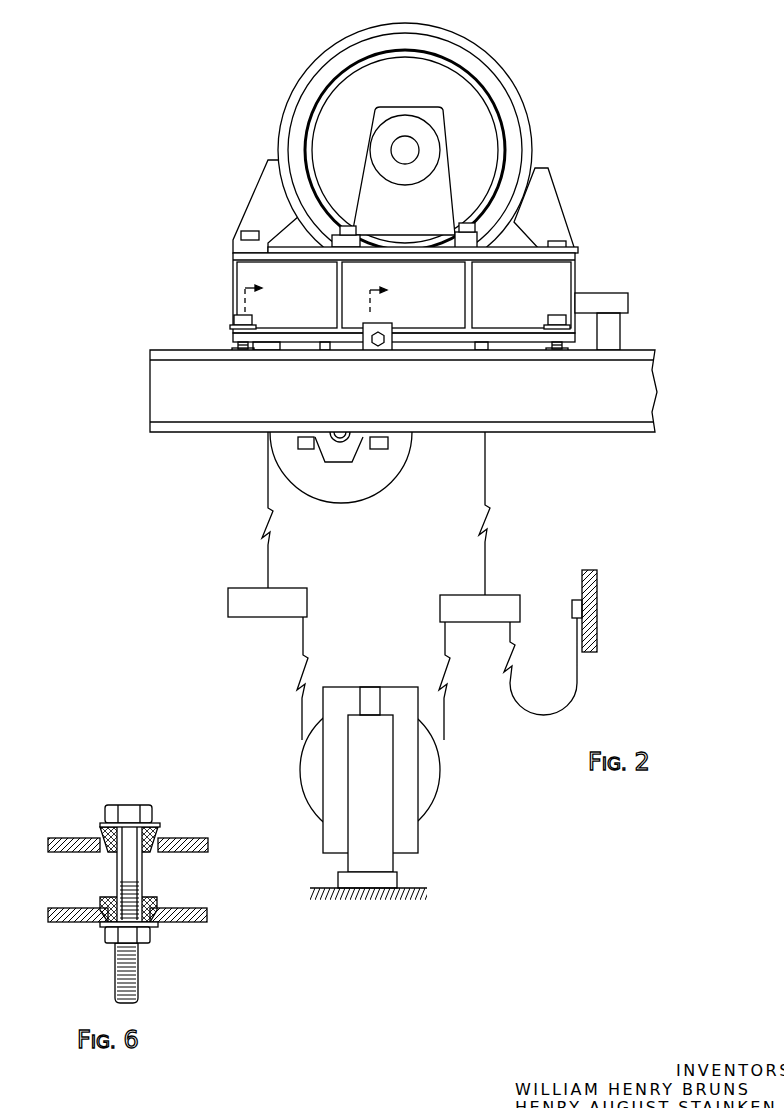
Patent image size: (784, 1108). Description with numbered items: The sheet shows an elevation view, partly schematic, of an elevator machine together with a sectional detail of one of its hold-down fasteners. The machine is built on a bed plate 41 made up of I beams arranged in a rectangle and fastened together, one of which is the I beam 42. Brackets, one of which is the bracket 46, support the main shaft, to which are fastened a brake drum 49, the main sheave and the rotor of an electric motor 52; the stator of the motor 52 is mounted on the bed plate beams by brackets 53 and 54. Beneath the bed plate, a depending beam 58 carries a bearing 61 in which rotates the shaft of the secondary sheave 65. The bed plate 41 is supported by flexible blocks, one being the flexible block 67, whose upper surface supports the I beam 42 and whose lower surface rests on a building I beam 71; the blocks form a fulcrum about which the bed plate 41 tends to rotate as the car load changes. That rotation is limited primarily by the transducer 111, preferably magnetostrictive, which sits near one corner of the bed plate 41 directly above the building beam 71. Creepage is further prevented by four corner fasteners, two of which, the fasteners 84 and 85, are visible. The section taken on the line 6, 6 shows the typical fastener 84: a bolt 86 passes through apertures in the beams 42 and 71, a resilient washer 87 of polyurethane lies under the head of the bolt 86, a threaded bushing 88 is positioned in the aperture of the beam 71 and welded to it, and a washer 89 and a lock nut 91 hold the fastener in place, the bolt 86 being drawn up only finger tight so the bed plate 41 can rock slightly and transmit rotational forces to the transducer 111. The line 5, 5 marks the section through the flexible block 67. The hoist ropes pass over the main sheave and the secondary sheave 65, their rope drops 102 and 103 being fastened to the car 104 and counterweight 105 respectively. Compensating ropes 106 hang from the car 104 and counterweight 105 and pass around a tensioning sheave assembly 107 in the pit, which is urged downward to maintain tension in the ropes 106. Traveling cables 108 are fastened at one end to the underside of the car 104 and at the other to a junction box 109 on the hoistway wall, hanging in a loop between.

In FIG. 2, the bed plate 41 is at (440, 294).
In FIG. 2, the I beam 42 is at (233, 272).
In FIG. 6, the I beam 42 is at (195, 840).
In FIG. 2, the bracket 46 is at (449, 188).
In FIG. 2, the brake drum 49 is at (346, 72).
In FIG. 2, the electric motor 52 is at (473, 37).
In FIG. 2, the bracket 53 is at (558, 188).
In FIG. 2, the bracket 54 is at (258, 178).
In FIG. 2, the depending beam 58 is at (423, 337).
In FIG. 2, the bearing 61 is at (344, 455).
In FIG. 2, the secondary sheave 65 is at (402, 479).
In FIG. 2, the flexible block 67 is at (391, 325).
In FIG. 2, the I beam 71 is at (150, 400).
In FIG. 6, the I beam 71 is at (196, 921).
In FIG. 2, the fastener 84 is at (236, 340).
In FIG. 6, the fastener 84 is at (77, 913).
In FIG. 2, the fastener 85 is at (563, 322).
In FIG. 6, the bolt 86 is at (143, 860).
In FIG. 6, the resilient washer 87 is at (160, 826).
In FIG. 6, the threaded bushing 88 is at (160, 905).
In FIG. 6, the washer 89 is at (160, 926).
In FIG. 6, the lock nut 91 is at (105, 935).
In FIG. 2, the rope drop 102 is at (485, 497).
In FIG. 2, the rope drop 103 is at (268, 490).
In FIG. 2, the car 104 is at (490, 595).
In FIG. 2, the counterweight 105 is at (243, 587).
In FIG. 2, the compensating ropes 106 is at (300, 713).
In FIG. 2, the tensioning sheave assembly 107 is at (418, 838).
In FIG. 2, the traveling cables 108 is at (520, 708).
In FIG. 2, the junction box 109 is at (572, 612).
In FIG. 2, the transducer 111 is at (641, 321).
In FIG. 2, the section line 5— 5 is at (385, 342).
In FIG. 2, the section line 6— 6 is at (261, 341).